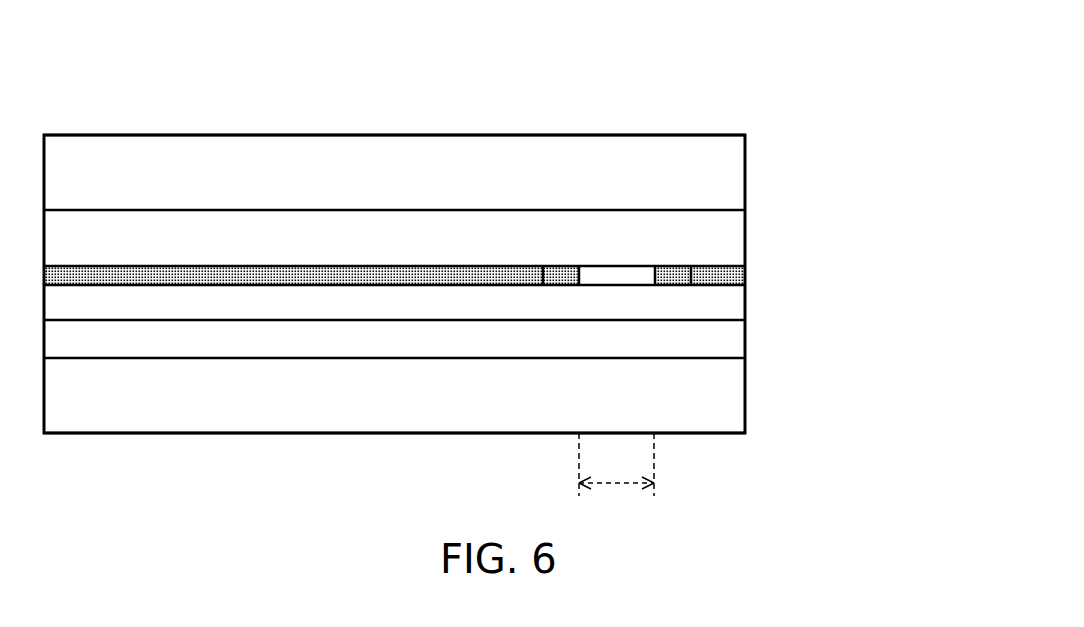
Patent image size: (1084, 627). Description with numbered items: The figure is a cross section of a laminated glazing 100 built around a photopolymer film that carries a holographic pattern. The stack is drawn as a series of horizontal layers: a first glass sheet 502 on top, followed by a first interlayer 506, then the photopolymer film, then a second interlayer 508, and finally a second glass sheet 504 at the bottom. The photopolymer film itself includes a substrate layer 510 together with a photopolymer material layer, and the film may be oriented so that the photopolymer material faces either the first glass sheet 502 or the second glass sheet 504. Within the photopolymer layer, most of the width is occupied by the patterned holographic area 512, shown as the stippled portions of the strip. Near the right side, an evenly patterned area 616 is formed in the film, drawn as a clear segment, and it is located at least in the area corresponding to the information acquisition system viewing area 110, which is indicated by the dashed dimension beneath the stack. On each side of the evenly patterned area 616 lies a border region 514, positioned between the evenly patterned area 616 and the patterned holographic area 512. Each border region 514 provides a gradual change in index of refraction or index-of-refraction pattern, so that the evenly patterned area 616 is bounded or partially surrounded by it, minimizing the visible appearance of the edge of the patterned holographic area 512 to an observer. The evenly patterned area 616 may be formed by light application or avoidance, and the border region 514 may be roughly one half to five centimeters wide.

The laminated glazing 100 is at (748, 107).
The first glass sheet 502 is at (732, 173).
The first interlayer 506 is at (732, 247).
The patterned holographic area 512 is at (265, 275).
The border region 514 is at (558, 273).
The evenly patterned area 616 is at (617, 275).
The substrate layer 510 is at (732, 302).
The second interlayer 508 is at (732, 340).
The second glass sheet 504 is at (732, 395).
The information acquisition system viewing area 110 is at (618, 483).